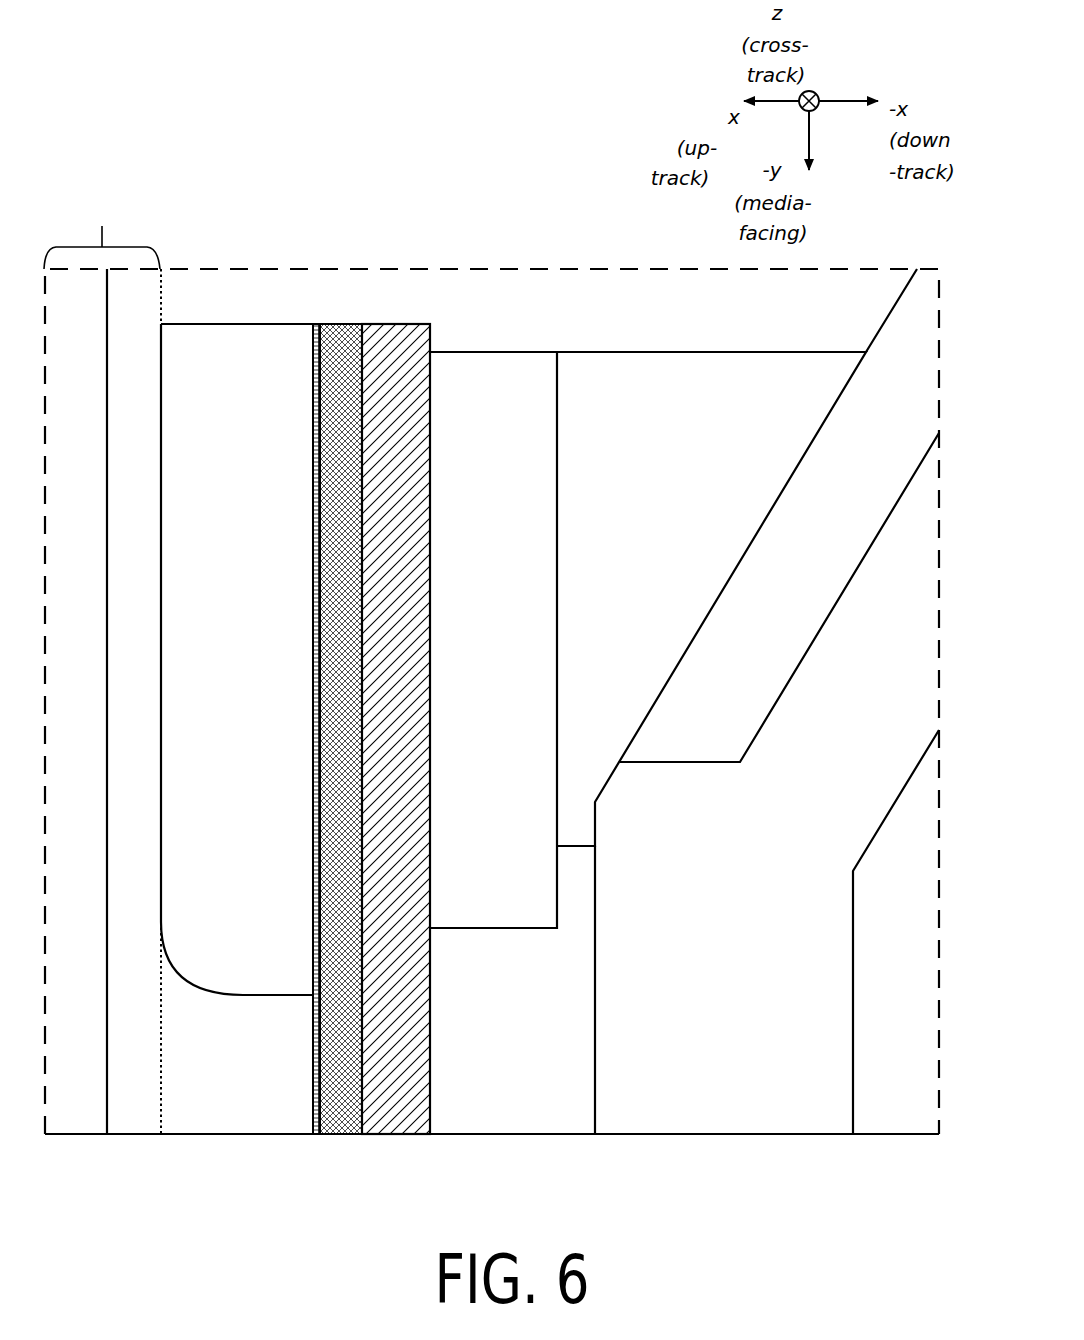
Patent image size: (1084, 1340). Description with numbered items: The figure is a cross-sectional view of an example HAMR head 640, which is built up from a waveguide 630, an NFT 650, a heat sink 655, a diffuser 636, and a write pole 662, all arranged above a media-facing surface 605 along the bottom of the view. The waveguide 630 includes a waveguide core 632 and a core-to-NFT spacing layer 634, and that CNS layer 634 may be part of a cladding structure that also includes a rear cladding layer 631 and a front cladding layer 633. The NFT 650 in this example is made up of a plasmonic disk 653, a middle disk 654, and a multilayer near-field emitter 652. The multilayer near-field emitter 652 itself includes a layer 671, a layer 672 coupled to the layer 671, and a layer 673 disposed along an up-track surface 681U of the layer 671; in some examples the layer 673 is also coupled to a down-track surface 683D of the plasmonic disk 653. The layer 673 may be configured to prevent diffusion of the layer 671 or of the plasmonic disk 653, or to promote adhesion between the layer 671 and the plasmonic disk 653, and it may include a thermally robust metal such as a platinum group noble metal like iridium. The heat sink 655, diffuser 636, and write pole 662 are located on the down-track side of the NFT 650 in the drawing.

The media-facing surface 605 is at (180, 1134).
The waveguide 630 is at (102, 231).
The rear cladding layer 631 is at (204, 313).
The waveguide core 632 is at (51, 717).
The front cladding layer 633 is at (213, 1094).
The core-to-NFT spacing (CNS) layer 634 is at (109, 717).
The diffuser 636 is at (682, 732).
The HAMR head 640 is at (472, 125).
The NFT 650 is at (463, 291).
The multilayer near-field emitter 652 is at (368, 318).
The plasmonic disk 653 is at (213, 673).
The middle disk 654 is at (469, 642).
The heat sink 655 is at (633, 553).
The write pole 662 is at (698, 1019).
The layer 671 is at (337, 788).
The layer 672 is at (417, 834).
The layer 673 is at (318, 709).
The up-track surface 681U is at (311, 873).
The down-track surface 683D is at (318, 506).